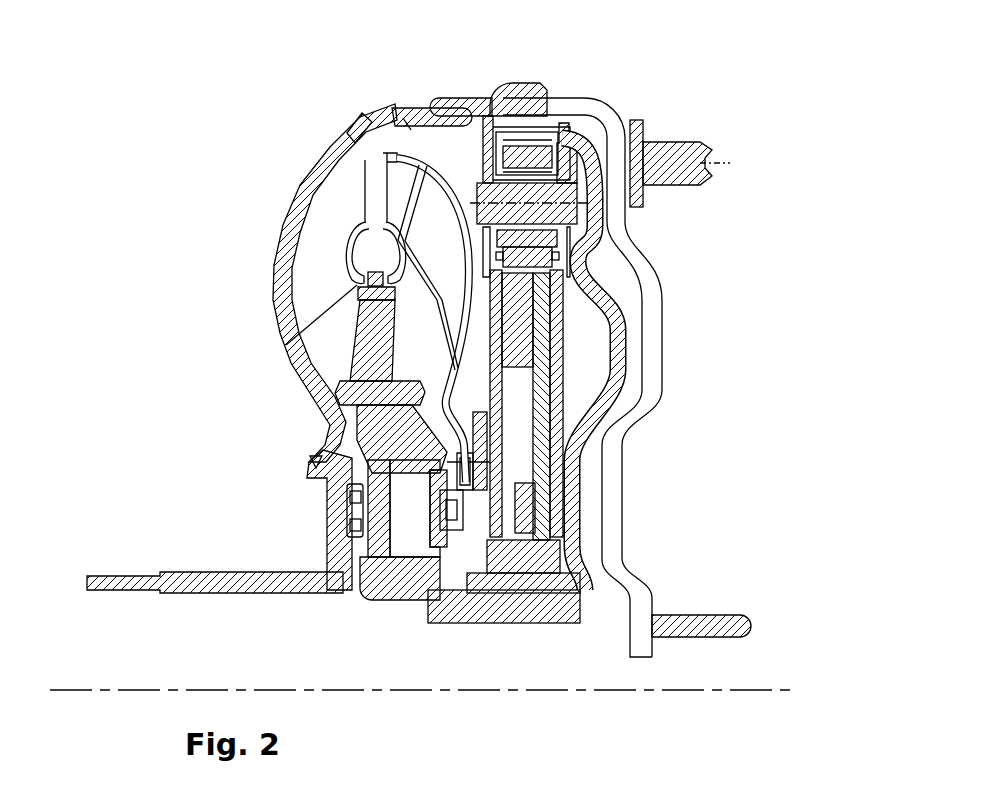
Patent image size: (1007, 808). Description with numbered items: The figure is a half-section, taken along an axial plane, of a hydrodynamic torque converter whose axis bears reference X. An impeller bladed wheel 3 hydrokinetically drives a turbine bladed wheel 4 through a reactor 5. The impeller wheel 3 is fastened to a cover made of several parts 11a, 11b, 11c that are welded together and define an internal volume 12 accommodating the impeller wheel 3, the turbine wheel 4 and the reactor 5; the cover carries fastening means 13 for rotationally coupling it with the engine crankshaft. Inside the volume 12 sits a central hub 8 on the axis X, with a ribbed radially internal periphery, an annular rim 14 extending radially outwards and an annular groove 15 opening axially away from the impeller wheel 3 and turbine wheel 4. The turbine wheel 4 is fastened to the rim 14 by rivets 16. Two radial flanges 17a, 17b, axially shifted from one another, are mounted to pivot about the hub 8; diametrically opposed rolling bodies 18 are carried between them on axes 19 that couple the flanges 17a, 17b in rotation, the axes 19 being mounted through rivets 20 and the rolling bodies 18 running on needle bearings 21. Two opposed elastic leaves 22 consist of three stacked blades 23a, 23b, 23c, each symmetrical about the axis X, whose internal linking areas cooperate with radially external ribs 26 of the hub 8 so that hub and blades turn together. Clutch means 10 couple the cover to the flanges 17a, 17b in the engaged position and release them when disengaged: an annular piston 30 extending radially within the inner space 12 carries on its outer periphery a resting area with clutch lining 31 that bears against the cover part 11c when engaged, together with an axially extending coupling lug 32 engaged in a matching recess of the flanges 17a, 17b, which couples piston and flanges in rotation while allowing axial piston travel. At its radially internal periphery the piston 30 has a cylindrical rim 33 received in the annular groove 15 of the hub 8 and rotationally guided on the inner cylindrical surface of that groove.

The impeller bladed wheel 3 is at (317, 268).
The turbine bladed wheel 4 is at (433, 212).
The reactor 5 is at (360, 335).
The central hub 8 is at (453, 623).
The clutch means 10 is at (623, 288).
The cover part 11a is at (335, 158).
The cover part 11b is at (460, 103).
The cover part 11c is at (573, 110).
The internal volume 12 is at (409, 126).
The fastening means 13 is at (717, 148).
The annular rim 14 is at (482, 585).
The annular groove 15 is at (510, 585).
The rivets 16 is at (380, 495).
The radial flange 17a is at (487, 120).
The radial flange 17b is at (555, 393).
The rolling bodies 18 is at (575, 258).
The axes 19 is at (556, 240).
The rivets 20 is at (548, 206).
The needle bearings 21 is at (529, 165).
The elastic leaves 22 is at (518, 420).
The blade 23a is at (513, 293).
The blade 23b is at (527, 323).
The blade 23c is at (543, 353).
The radially external ribs 26 is at (560, 590).
The annular piston 30 is at (587, 433).
The clutch lining 31 is at (650, 142).
The coupling lug 32 is at (525, 148).
The cylindrical rim 33 is at (533, 590).
The axis X is at (690, 692).